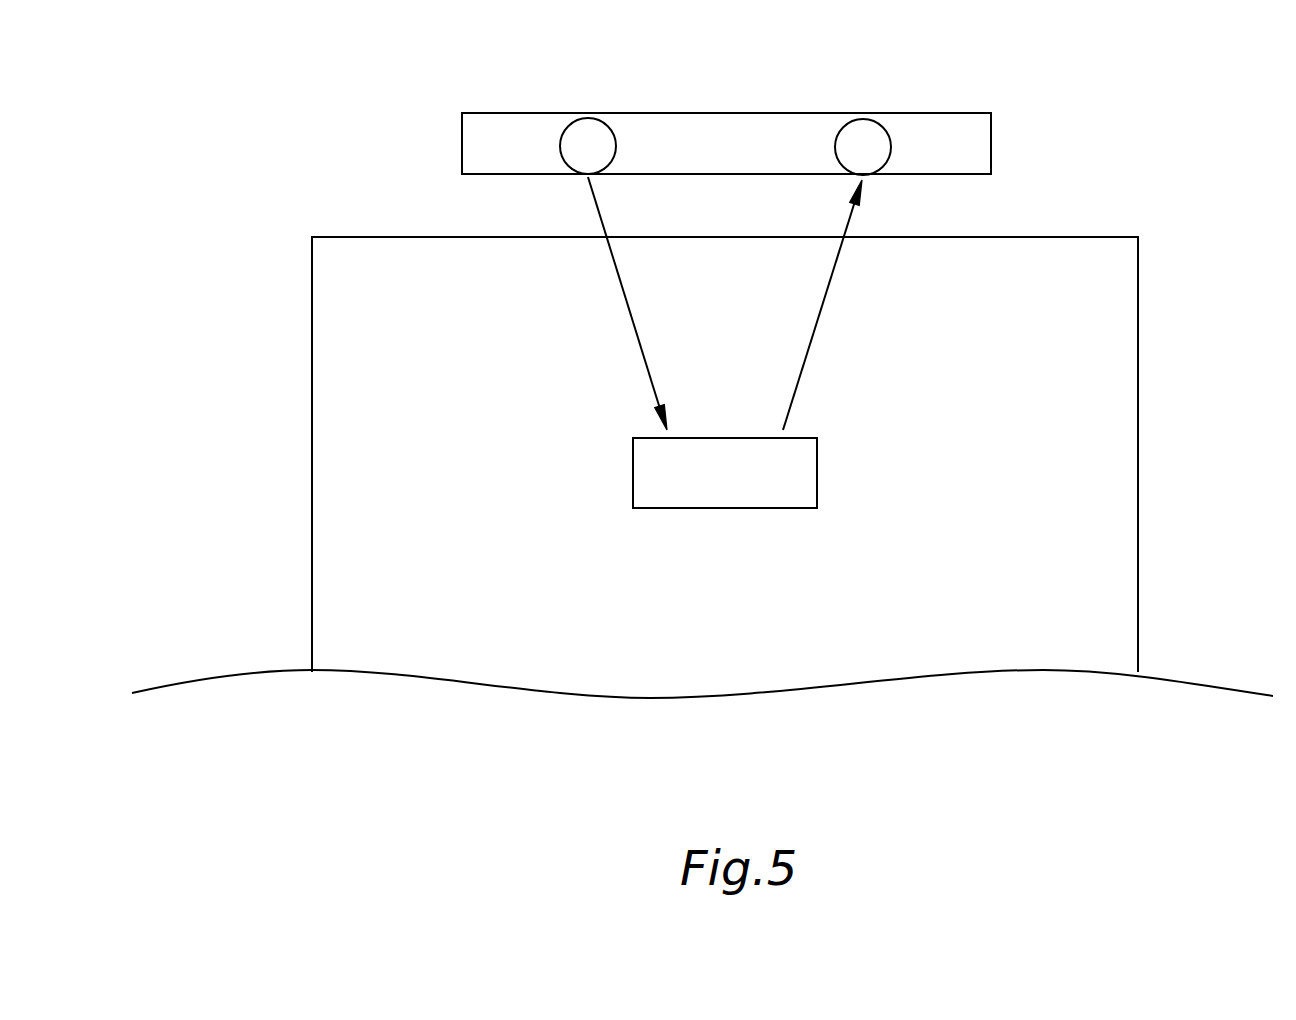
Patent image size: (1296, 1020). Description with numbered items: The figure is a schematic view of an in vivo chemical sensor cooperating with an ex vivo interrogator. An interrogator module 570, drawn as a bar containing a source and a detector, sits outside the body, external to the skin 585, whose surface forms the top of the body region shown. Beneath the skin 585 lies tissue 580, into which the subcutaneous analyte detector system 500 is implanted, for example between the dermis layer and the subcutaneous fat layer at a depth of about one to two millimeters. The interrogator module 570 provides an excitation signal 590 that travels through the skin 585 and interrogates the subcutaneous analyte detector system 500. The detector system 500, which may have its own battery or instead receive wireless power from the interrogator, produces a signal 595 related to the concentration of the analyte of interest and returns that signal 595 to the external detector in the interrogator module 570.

The subcutaneous analyte detector system 500 is at (748, 523).
The interrogator module 570 is at (717, 128).
The tissue 580 is at (1097, 416).
The skin 585 is at (1063, 235).
The excitation signal 590 is at (627, 307).
The signal 595 is at (822, 307).